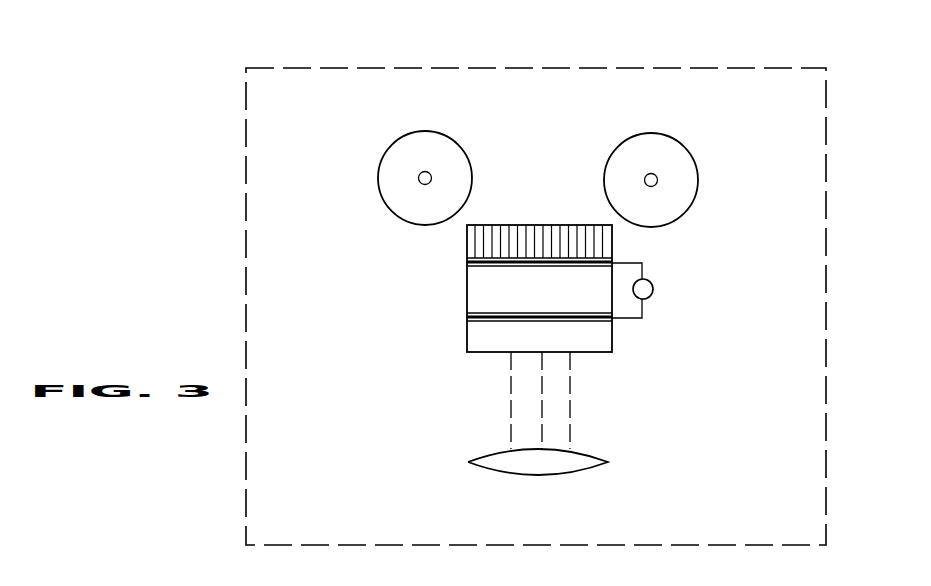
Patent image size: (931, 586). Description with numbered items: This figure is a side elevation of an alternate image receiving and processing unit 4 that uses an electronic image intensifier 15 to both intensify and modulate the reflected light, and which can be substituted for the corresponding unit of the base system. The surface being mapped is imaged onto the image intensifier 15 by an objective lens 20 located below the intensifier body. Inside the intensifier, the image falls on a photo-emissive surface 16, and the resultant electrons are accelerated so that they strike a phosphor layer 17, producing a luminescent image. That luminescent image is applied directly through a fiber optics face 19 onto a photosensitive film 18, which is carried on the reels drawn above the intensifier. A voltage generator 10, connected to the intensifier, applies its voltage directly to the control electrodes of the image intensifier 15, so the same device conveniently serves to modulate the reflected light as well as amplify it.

The image receiving and processing unit 4 is at (531, 67).
The voltage generator 10 is at (654, 289).
The image intensifier 15 is at (456, 296).
The photo-emissive surface 16 is at (467, 318).
The phosphor layer 17 is at (467, 262).
The photosensitive film 18 is at (537, 225).
The fiber optics face 19 is at (596, 243).
The objective lens 20 is at (583, 449).